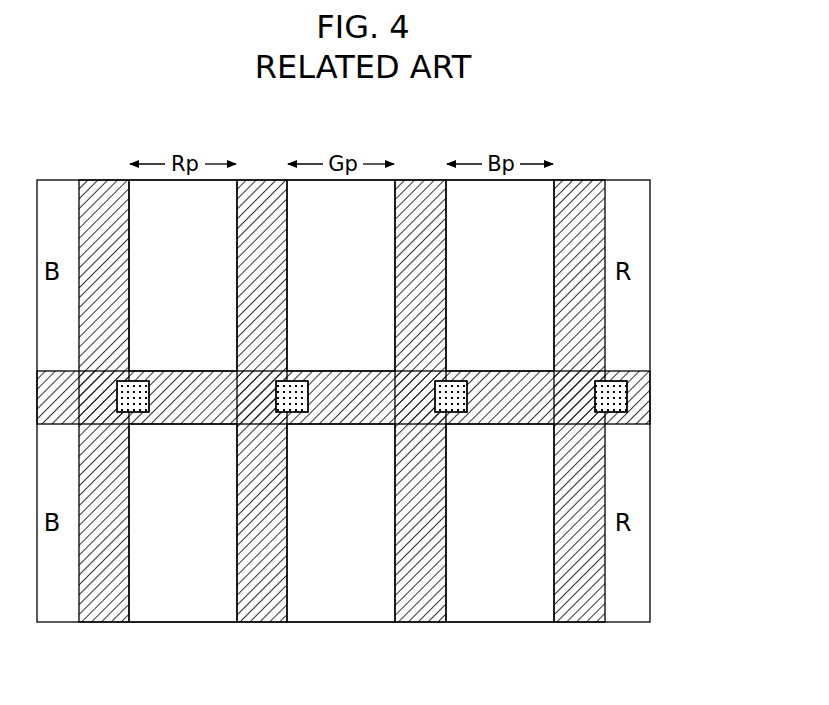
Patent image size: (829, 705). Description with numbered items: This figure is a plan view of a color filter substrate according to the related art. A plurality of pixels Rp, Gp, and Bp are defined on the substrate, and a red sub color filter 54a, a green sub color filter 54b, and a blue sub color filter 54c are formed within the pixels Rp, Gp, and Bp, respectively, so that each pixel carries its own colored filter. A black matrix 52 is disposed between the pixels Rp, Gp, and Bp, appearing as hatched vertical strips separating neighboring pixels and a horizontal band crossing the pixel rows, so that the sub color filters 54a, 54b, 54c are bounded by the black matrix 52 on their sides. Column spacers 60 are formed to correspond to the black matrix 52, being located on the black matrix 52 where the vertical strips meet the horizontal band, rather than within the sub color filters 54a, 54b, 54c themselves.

The black matrix 52 is at (79, 173).
The red sub color filter 54a is at (173, 612).
The green sub color filter 54b is at (333, 612).
The blue sub color filter 54c is at (506, 610).
The column spacer 60 is at (627, 397).